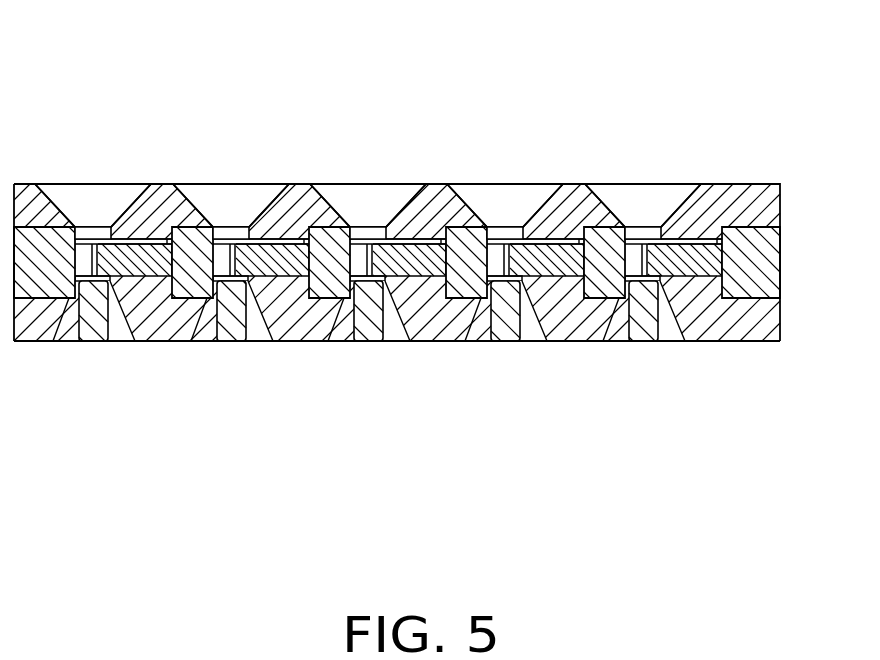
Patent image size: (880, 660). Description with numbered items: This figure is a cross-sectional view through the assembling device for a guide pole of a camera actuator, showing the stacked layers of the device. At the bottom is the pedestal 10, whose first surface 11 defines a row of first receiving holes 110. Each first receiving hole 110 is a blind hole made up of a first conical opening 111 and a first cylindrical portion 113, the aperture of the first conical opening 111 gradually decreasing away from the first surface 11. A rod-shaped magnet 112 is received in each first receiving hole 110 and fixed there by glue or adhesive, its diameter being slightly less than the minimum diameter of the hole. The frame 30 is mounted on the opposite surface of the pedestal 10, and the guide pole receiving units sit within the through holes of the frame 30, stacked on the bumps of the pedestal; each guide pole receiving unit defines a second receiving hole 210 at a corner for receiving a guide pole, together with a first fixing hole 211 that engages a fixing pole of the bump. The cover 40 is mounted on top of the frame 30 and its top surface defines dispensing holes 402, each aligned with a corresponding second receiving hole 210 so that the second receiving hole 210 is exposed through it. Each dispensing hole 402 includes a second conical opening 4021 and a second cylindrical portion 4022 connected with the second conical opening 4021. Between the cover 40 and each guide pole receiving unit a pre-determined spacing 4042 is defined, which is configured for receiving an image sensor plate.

The pedestal 10 is at (762, 331).
The first surface 11 is at (722, 342).
The frame 30 is at (752, 263).
The cover 40 is at (429, 158).
The dispensing hole 402 is at (368, 158).
The second conical opening 4021 is at (52, 216).
The second cylindrical portion 4022 is at (110, 204).
The pre-determined spacing 4042 is at (280, 238).
The first receiving hole 110 is at (356, 370).
The first conical opening 111 is at (79, 302).
The magnet 112 is at (100, 311).
The first cylindrical portion 113 is at (90, 281).
The second receiving hole 210 is at (662, 237).
The first fixing hole 211 is at (634, 247).